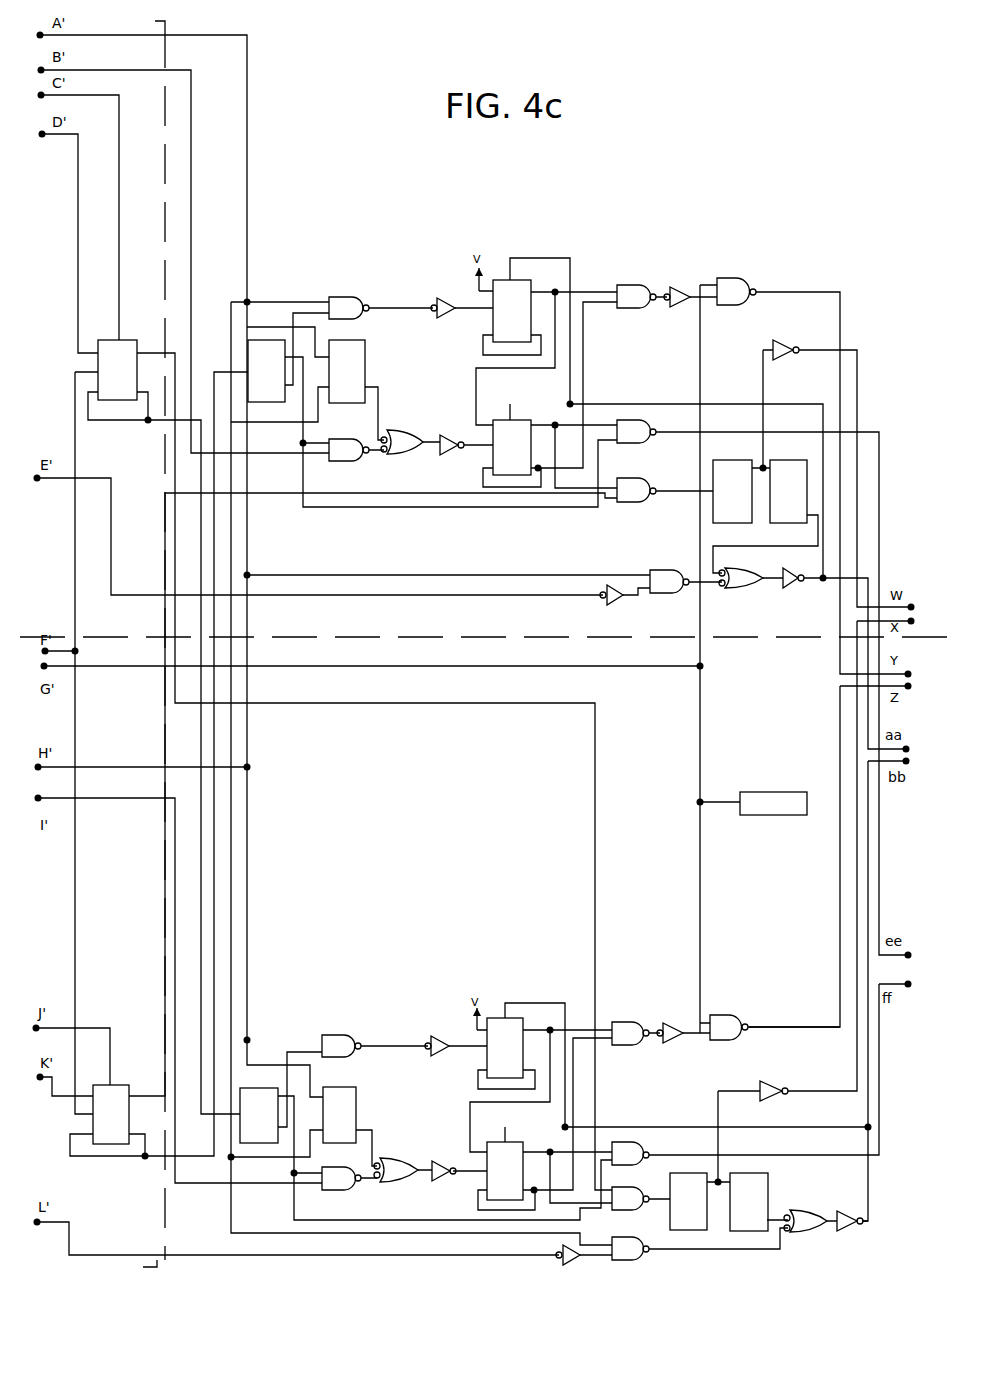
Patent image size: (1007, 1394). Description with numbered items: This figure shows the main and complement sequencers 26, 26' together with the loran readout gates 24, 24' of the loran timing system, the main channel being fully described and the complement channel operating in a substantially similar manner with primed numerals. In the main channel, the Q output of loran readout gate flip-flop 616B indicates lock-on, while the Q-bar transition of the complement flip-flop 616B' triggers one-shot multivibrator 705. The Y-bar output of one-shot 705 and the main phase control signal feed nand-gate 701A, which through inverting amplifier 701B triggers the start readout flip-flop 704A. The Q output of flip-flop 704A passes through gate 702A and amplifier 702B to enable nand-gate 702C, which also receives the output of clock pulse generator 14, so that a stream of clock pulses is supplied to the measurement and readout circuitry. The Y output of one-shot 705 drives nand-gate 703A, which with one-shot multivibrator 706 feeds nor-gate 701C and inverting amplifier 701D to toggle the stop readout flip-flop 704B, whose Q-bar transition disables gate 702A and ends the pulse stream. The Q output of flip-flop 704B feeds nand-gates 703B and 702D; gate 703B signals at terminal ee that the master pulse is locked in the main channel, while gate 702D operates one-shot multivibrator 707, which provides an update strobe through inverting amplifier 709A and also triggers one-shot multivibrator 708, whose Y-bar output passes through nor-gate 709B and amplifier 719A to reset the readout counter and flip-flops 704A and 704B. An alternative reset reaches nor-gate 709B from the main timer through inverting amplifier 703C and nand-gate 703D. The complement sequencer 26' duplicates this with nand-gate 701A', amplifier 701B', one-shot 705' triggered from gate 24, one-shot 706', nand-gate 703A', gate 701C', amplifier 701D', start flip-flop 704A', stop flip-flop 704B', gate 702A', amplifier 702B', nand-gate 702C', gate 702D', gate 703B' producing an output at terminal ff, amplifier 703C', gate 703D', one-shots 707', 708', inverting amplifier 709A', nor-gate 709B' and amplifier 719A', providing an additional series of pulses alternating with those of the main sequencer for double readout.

The clock pulse generator 14 is at (775, 790).
The loran readout gate 24 is at (111, 468).
The loran readout gate 24' is at (113, 968).
The sequencer 26 is at (378, 218).
The complement sequencer 26' is at (397, 841).
The loran readout gate flip-flop 616B is at (133, 357).
The loran readout gate flip-flop 616B' is at (90, 1135).
The nand-gate 701A is at (345, 298).
The inverting amplifier 701B is at (446, 297).
The nor-gate 701C is at (405, 452).
The inverting amplifier 701D is at (451, 434).
The gate 702A is at (628, 279).
The amplifier 702B is at (684, 276).
The nand-gate 702C is at (752, 277).
The nand-gate 702D is at (656, 502).
The nand-gate 703A is at (348, 437).
The nand-gate 703B is at (653, 442).
The inverting amplifier 703C is at (637, 604).
The nand-gate 703D is at (667, 570).
The start readout flip-flop 704A is at (526, 293).
The stop readout flip-flop 704B is at (522, 430).
The one-shot multivibrator 705 is at (270, 381).
The one-shot multivibrator 706 is at (367, 369).
The one-shot multivibrator 707 is at (732, 480).
The one-shot multivibrator 708 is at (789, 480).
The inverting amplifier 709A is at (798, 338).
The nor-gate 709B is at (748, 568).
The amplifier 719A is at (805, 589).
The nand-gate 701A' is at (339, 1032).
The inverting amplifier 701B' is at (424, 1024).
The gate 701C' is at (414, 1182).
The amplifier 701D' is at (444, 1159).
The gate 702A' is at (629, 1015).
The amplifier 702B' is at (667, 1022).
The nand-gate 702C' is at (733, 1015).
The gate 702D' is at (630, 1189).
The nand-gate 703A' is at (341, 1192).
The gate 703B' is at (654, 1148).
The inverting amplifier 703C' is at (592, 1265).
The gate 703D' is at (659, 1257).
The complement start readout flip-flop 704A' is at (515, 1026).
The stop readout flip-flop 704B' is at (509, 1152).
The one-shot multivibrator 705' is at (260, 1105).
The one-shot multivibrator 706' is at (361, 1104).
The one-shot multivibrator 707' is at (669, 1202).
The one-shot multivibrator 708' is at (773, 1202).
The inverting amplifier 709A' is at (778, 1076).
The gate 709B' is at (810, 1234).
The amplifier 719A' is at (859, 1242).